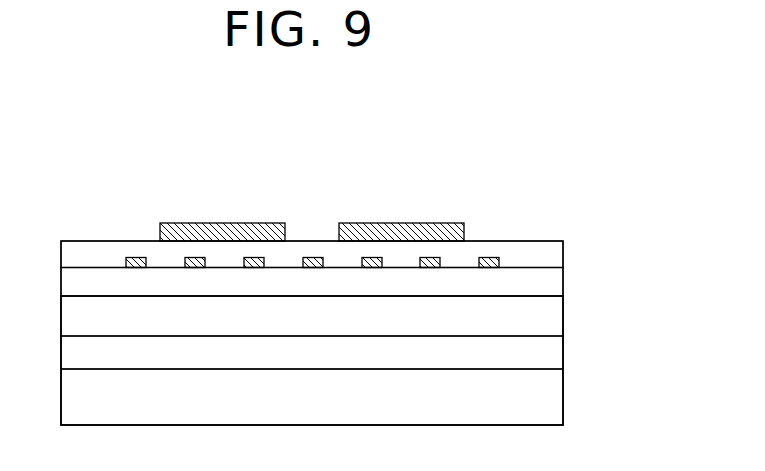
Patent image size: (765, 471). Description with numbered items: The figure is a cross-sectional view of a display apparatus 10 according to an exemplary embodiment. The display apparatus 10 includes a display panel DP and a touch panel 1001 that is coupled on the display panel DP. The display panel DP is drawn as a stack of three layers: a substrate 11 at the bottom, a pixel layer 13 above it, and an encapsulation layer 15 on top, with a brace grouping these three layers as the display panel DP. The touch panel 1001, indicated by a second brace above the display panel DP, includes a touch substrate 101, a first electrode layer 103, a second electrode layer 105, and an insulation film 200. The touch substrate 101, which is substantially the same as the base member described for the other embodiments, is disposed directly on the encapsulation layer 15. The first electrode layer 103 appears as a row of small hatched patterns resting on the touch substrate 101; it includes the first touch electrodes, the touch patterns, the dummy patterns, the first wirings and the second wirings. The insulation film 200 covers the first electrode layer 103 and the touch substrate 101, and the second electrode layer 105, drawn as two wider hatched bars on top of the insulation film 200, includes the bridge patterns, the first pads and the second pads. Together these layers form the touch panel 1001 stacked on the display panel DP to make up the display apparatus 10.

The display apparatus 10 is at (531, 140).
The touch panel 1001 is at (590, 242).
The insulation film 200 is at (313, 250).
The touch substrate 101 is at (86, 282).
The first electrode layer 103 is at (134, 258).
The second electrode layer 105 is at (220, 223).
The encapsulation layer 15 is at (555, 316).
The pixel layer 13 is at (555, 352).
The substrate 11 is at (555, 396).
The display panel DP is at (638, 307).